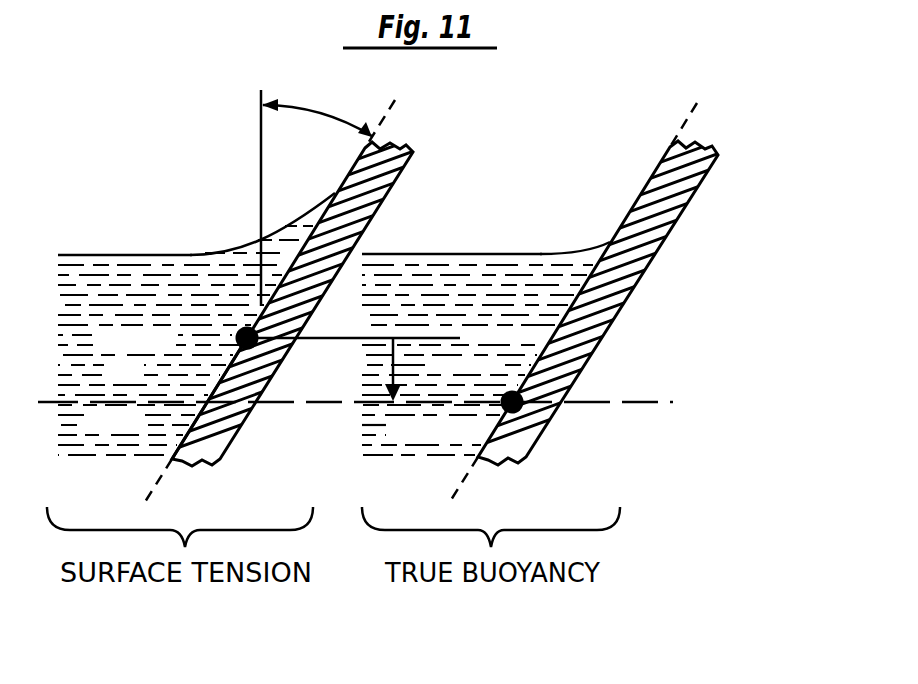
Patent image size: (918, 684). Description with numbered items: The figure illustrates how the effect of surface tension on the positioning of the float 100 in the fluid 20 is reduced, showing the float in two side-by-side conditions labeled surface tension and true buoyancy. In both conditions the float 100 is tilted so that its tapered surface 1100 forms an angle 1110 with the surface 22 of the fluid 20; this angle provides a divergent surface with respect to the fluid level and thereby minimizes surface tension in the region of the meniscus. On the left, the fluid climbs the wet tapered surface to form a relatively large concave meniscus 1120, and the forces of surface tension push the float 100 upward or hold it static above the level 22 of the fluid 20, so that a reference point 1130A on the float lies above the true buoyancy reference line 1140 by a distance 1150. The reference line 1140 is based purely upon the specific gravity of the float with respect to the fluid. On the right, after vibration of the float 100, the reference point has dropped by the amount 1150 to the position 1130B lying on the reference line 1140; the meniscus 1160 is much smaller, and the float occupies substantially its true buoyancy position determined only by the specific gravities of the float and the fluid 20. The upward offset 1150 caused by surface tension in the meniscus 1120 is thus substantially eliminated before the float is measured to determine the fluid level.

The fluid 20 is at (325, 340).
The surface of the fluid 22 is at (163, 254).
The float 100 is at (398, 178).
The tapered surface 1100 is at (190, 427).
The angle 1110 is at (311, 104).
The meniscus 1120 is at (297, 215).
The reference point 1130A is at (236, 338).
The reference point position 1130B is at (503, 412).
The true buoyancy reference line 1140 is at (618, 400).
The distance 1150 is at (396, 360).
The meniscus 1160 is at (600, 245).